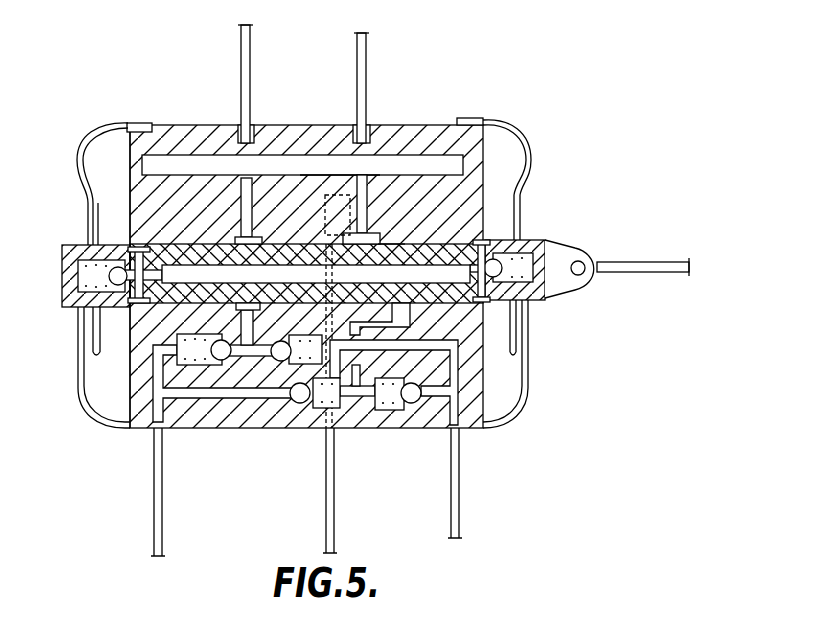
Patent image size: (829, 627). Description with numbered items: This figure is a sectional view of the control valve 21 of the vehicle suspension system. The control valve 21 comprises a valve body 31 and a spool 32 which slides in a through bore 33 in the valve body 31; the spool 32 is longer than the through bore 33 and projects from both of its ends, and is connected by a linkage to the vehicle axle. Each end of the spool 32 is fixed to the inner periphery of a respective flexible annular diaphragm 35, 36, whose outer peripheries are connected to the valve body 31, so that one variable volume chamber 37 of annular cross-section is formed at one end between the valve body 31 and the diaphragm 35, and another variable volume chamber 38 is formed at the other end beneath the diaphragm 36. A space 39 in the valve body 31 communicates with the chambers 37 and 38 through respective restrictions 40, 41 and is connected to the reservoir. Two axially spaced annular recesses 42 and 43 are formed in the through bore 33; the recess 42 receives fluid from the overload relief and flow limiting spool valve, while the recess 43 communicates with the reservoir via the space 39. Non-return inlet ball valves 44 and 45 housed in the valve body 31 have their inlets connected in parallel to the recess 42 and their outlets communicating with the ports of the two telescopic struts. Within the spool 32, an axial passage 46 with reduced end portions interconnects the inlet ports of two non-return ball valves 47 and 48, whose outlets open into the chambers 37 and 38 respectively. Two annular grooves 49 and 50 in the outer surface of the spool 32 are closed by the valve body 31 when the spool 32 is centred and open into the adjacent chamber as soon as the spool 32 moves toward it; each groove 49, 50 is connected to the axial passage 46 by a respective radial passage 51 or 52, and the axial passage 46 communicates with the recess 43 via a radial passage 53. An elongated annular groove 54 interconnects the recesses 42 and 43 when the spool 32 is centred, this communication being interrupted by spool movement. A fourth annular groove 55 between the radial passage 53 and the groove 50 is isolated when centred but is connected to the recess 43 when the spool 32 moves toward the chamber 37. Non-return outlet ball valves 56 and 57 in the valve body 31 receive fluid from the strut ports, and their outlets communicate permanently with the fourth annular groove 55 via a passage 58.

The control valve 21 is at (417, 106).
The valve body 31 is at (308, 133).
The spool 32 is at (211, 247).
The through bore 33 is at (200, 247).
The annular diaphragm 35 is at (80, 422).
The annular diaphragm 36 is at (527, 413).
The variable volume chamber 37 is at (108, 364).
The variable volume chamber 38 is at (500, 373).
The space 39 is at (336, 165).
The restriction 40 is at (105, 124).
The restriction 41 is at (497, 120).
The annular recess 42 is at (210, 268).
The annular recess 43 is at (372, 242).
The non-return inlet ball valve 44 is at (222, 360).
The non-return inlet ball valve 45 is at (281, 361).
The axial passage 46 is at (185, 247).
The non-return ball valve 47 is at (80, 270).
The non-return ball valve 48 is at (552, 266).
The annular groove 49 is at (147, 245).
The annular groove 50 is at (470, 238).
The radial passage 51 is at (78, 263).
The radial passage 52 is at (500, 260).
The radial passage 53 is at (390, 242).
The elongated annular groove 54 is at (276, 250).
The fourth annular groove 55 is at (420, 294).
The non-return outlet ball valve 56 is at (312, 384).
The non-return outlet ball valve 57 is at (415, 385).
The passage 58 is at (366, 388).